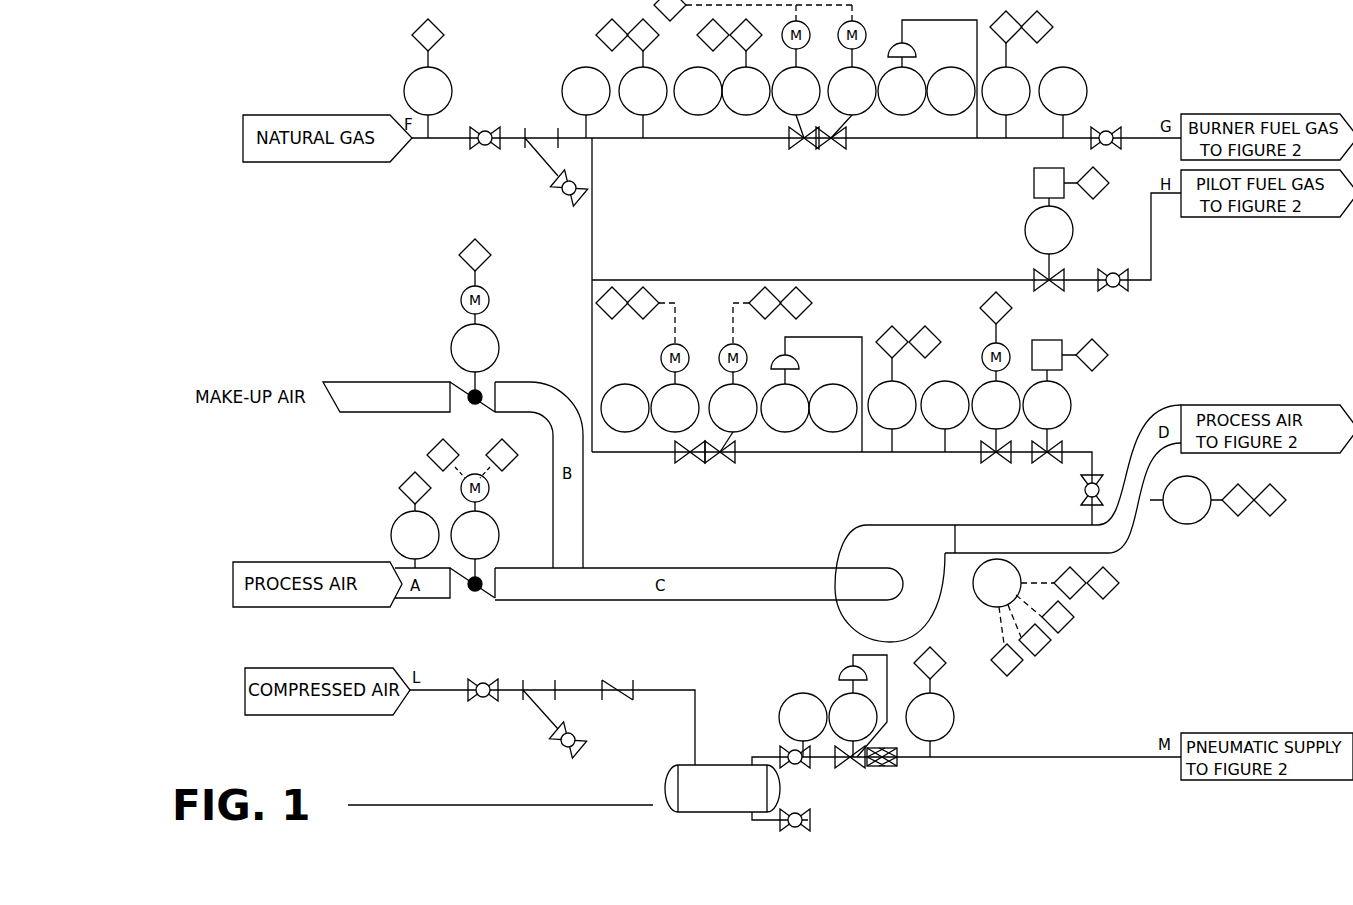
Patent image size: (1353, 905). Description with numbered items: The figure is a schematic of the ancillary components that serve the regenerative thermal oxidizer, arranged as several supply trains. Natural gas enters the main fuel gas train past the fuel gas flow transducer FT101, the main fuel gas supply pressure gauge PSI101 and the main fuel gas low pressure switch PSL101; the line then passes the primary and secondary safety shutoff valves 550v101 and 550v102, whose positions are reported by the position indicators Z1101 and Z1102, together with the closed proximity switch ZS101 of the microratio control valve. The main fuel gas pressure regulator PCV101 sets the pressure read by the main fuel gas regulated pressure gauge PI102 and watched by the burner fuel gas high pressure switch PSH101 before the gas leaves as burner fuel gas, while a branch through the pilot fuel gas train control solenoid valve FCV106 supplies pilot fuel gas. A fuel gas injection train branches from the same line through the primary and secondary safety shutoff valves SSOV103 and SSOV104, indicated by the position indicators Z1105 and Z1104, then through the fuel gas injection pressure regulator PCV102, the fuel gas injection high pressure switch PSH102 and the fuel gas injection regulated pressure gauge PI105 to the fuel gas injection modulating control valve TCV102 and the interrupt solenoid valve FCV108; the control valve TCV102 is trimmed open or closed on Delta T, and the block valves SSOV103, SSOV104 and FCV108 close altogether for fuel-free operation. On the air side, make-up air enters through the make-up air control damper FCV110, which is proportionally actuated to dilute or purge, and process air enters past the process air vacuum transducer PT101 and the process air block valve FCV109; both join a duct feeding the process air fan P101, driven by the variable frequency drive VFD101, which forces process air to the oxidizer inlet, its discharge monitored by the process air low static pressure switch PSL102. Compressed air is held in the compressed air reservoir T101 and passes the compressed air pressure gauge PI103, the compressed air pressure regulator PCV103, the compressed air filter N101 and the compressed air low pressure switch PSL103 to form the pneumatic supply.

The fuel gas flow transducer FT101 is at (428, 78).
The main fuel gas supply pressure gauge PSI101 is at (599, 78).
The main fuel gas low pressure switch PSL101 is at (735, 69).
The burner fuel gas train primary safety shutoff valve position indicator Z1101 is at (698, 91).
The burner fuel gas/combustion air microratio control valve closed proximity switch ZS101 is at (734, 77).
The burner fuel gas train primary safety shutoff valve 550v101 is at (796, 94).
The burner fuel gas train secondary safety shutoff valve 550v102 is at (846, 94).
The main fuel gas pressure regulator PCV101 is at (927, 79).
The burner fuel gas train secondary safety shutoff valve position indicator Z1102 is at (951, 91).
The burner fuel gas high pressure switch PSH101 is at (1018, 74).
The main fuel gas regulated pressure gauge PI102 is at (1063, 102).
The pilot fuel gas train control solenoid valve FCV106 is at (1067, 237).
The fuel gas injection train secondary safety shutoff valve position indicator Z1105 is at (625, 408).
The fuel gas injection train primary safety shutoff valve SSOV103 is at (650, 383).
The fuel gas injection train secondary safety shutoff valve SSOV104 is at (758, 383).
The fuel gas injection pressure regulator PCV102 is at (811, 394).
The fuel gas injection train primary safety shutoff valve position indicator Z1104 is at (833, 408).
The fuel gas injection high pressure switch PSH102 is at (904, 389).
The fuel gas injection regulated pressure gauge PI105 is at (945, 416).
The fuel gas injection modulating control valve TCV102 is at (996, 377).
The fuel gas injection train interrupt control solenoid valve FCV108 is at (1065, 409).
The make-up air control damper FCV110 is at (474, 325).
The process air block valve FCV109 is at (463, 511).
The process air vacuum transducer PT101 is at (415, 520).
The process air fan P101 is at (1008, 523).
The process air fan variable frequency drive VFD101 is at (1063, 624).
The process air low static pressure switch PSL102 is at (1218, 494).
The compressed air reservoir T101 is at (563, 788).
The compressed air pressure gauge PI103 is at (803, 725).
The compressed air pressure regulator PCV103 is at (858, 711).
The compressed air filter N101 is at (890, 771).
The compressed air low pressure switch PSL103 is at (945, 702).